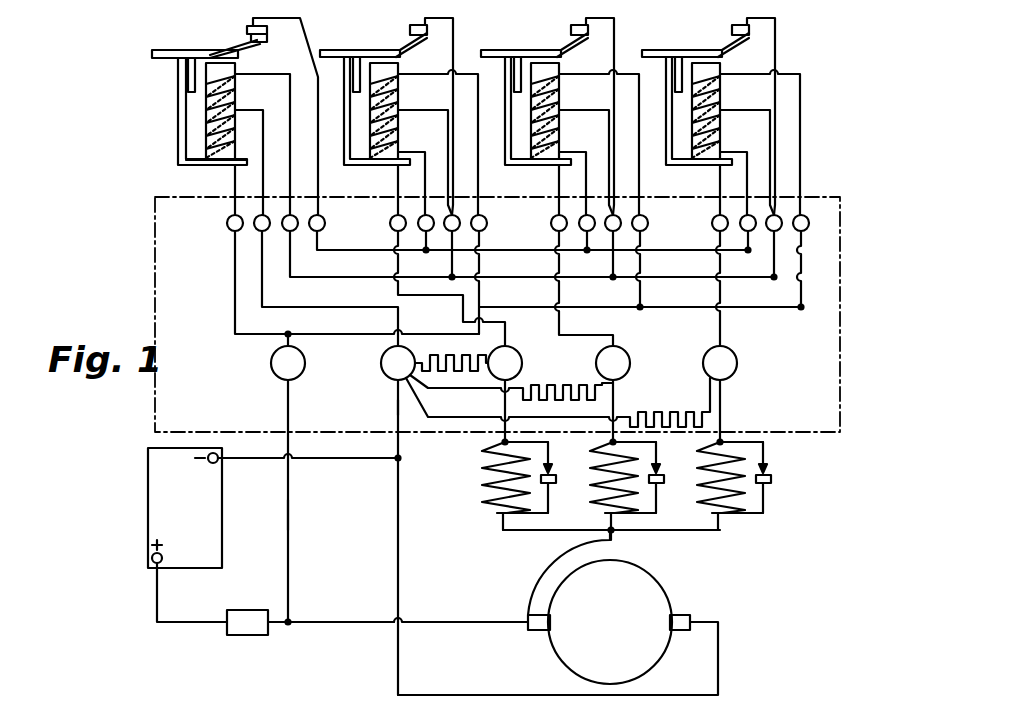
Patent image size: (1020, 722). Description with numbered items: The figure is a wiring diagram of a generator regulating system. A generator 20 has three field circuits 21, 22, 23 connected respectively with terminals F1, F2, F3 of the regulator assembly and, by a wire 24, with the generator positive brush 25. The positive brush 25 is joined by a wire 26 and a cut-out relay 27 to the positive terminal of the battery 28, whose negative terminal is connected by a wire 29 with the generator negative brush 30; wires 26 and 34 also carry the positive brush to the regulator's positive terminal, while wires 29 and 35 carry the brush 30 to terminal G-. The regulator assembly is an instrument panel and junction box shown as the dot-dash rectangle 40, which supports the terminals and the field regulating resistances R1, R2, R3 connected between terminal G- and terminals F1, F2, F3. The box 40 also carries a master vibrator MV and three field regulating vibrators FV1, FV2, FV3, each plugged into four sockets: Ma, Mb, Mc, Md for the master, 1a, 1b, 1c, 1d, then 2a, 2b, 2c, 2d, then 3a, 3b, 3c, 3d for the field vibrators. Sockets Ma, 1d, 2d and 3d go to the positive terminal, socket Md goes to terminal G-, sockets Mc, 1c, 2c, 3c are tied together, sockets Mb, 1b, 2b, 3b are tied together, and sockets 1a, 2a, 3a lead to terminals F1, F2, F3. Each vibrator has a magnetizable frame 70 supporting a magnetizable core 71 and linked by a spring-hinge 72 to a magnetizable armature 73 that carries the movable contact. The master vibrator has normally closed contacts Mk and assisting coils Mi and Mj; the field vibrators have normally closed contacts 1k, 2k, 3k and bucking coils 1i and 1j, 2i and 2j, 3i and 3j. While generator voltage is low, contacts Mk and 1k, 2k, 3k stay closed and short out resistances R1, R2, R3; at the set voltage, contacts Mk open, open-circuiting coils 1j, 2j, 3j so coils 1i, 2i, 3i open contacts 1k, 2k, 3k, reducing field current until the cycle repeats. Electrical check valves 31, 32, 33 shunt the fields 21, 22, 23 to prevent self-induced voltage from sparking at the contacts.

The master vibrator MV is at (210, 19).
The field regulating vibrator FV1 is at (372, 19).
The field regulating vibrator FV2 is at (560, 107).
The field regulating vibrator FV3 is at (721, 107).
The magnetizable frame 70 is at (178, 120).
The magnetizable core 71 is at (205, 157).
The spring-hinge 72 is at (158, 50).
The magnetizable armature 73 is at (212, 55).
The coil Mi is at (236, 90).
The coil Mj is at (236, 130).
The normally closed contacts Mk is at (268, 40).
The coil 1i is at (398, 90).
The coil 1j is at (398, 129).
The normally closed contacts 1k is at (410, 32).
The coil 2i is at (555, 111).
The coil 2j is at (555, 136).
The normally closed contacts 2k is at (572, 116).
The coil 3i is at (716, 111).
The coil 3j is at (716, 136).
The normally closed contacts 3k is at (733, 116).
The socket Ma is at (227, 226).
The socket Mb is at (324, 221).
The socket Mc is at (288, 232).
The socket Md is at (258, 232).
The socket 1a is at (391, 229).
The socket 1b is at (420, 220).
The socket 1c is at (452, 214).
The socket 1d is at (486, 221).
The socket 2a is at (567, 280).
The socket 2b is at (580, 225).
The socket 2c is at (605, 246).
The socket 2d is at (650, 253).
The socket 3a is at (704, 280).
The socket 3b is at (741, 225).
The socket 3c is at (767, 246).
The socket 3d is at (812, 253).
The terminal G- is at (381, 364).
The terminal F1 is at (505, 395).
The terminal F2 is at (613, 395).
The terminal F3 is at (720, 395).
The field regulating resistance R1 is at (451, 354).
The field regulating resistance R2 is at (511, 383).
The field regulating resistance R3 is at (558, 402).
The wire 35 is at (398, 407).
The instrument panel and junction box 40 is at (842, 280).
The generator 20 is at (663, 592).
The field circuit 21 is at (482, 478).
The field circuit 22 is at (593, 482).
The field circuit 23 is at (700, 482).
The wire 24 is at (553, 568).
The generator positive brush 25 is at (535, 633).
The wire 26 is at (333, 625).
The cut-out relay 27 is at (240, 637).
The battery 28 is at (150, 514).
The wire 29 is at (397, 500).
The generator negative brush 30 is at (686, 633).
The electrical check valve 31 is at (553, 471).
The electrical check valve 32 is at (661, 471).
The electrical check valve 33 is at (768, 471).
The wire 34 is at (288, 517).